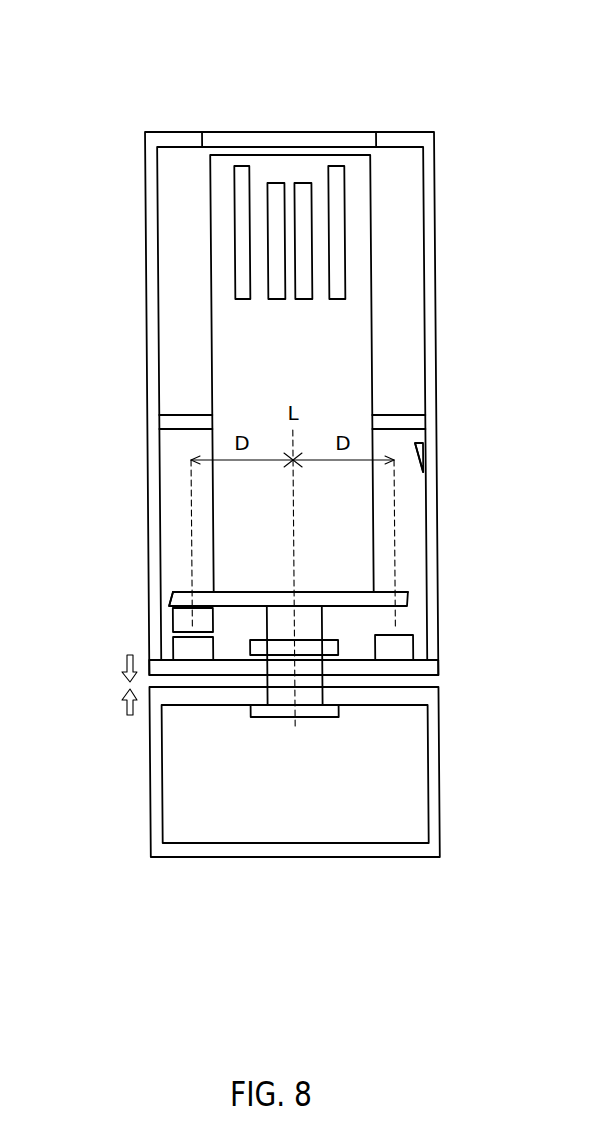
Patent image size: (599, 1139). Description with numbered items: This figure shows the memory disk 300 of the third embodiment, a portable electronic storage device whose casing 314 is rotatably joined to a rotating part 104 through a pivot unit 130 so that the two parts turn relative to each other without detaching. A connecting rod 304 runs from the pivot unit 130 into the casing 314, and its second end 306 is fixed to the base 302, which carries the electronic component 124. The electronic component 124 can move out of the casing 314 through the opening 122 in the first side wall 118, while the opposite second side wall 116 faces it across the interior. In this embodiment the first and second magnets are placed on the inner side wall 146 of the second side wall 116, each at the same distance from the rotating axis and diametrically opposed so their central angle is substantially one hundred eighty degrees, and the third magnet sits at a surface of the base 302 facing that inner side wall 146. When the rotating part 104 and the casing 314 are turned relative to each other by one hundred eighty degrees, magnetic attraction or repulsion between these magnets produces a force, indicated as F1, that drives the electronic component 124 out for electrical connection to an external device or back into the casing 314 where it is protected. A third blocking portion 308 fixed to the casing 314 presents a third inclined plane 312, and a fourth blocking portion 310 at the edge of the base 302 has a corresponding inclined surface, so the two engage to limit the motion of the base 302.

The memory disk 300 is at (124, 48).
The opening 122 is at (341, 135).
The first side wall 118 is at (413, 139).
The casing 314 is at (432, 187).
The electronic component 124 is at (362, 330).
The third blocking portion 308 is at (423, 445).
The third inclined plane 312 is at (409, 467).
The second end 306 is at (308, 595).
The base 302 is at (400, 597).
The connecting rod 304 is at (303, 622).
The inner side wall 146 is at (360, 652).
The second side wall 116 is at (413, 667).
The rotating part 104 is at (438, 763).
The pivot unit 130 is at (315, 718).
The fourth blocking portion 310 is at (158, 596).
The force direction F1 is at (119, 685).